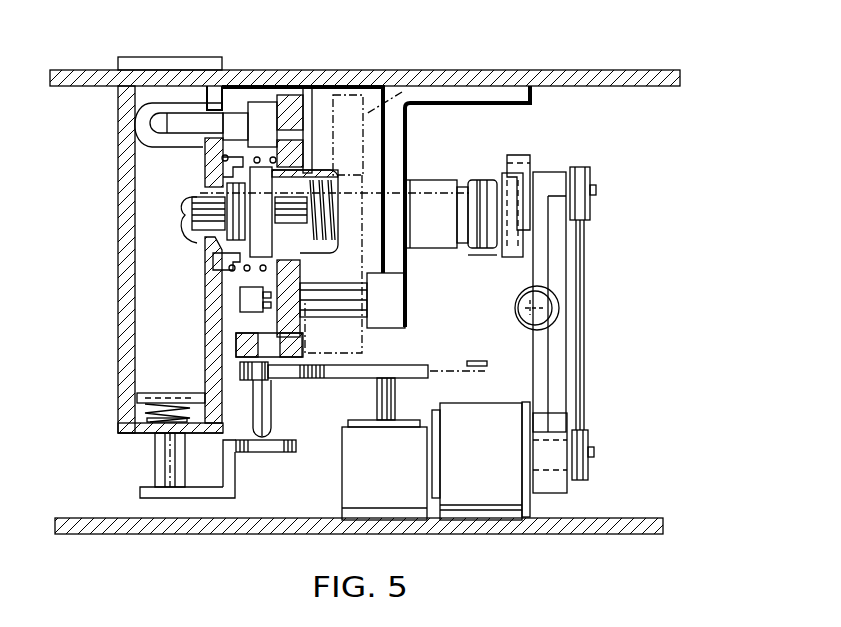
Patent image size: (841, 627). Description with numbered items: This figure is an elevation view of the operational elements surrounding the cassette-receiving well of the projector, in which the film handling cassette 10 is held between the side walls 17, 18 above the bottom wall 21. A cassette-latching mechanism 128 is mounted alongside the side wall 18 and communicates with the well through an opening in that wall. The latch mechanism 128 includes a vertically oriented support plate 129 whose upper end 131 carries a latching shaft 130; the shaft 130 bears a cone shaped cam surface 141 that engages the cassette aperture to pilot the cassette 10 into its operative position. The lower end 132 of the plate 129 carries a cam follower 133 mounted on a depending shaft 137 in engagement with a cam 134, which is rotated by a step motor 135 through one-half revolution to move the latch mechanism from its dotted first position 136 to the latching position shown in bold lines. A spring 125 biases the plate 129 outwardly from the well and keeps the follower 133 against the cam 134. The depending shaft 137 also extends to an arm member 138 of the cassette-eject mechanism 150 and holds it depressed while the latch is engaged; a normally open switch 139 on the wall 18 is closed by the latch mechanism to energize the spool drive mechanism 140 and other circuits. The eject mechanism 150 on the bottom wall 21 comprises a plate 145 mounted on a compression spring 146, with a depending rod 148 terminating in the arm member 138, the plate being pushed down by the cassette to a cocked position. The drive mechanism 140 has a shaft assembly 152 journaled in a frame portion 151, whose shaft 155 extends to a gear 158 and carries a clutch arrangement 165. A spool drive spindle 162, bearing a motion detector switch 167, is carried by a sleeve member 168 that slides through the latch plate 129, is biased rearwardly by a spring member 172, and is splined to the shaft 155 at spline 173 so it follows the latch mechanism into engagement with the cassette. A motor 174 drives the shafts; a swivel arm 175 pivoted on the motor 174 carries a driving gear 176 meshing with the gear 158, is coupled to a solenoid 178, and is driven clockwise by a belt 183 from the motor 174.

The film handling cassette 10 is at (197, 56).
The side wall 17 is at (118, 106).
The side wall 18 is at (208, 97).
The bottom wall 21 is at (131, 436).
The spring 125 is at (205, 150).
The cassette-latching mechanism 128 is at (313, 90).
The support plate 129 is at (209, 117).
The latching shaft 130 is at (192, 117).
The upper end 131 is at (303, 95).
The lower end 132 is at (302, 340).
The cam follower 133 is at (265, 380).
The cam 134 is at (412, 366).
The motor 135 is at (355, 487).
The first position 136 is at (408, 86).
The depending shaft 137 is at (270, 422).
The arm member 138 is at (268, 452).
The switch 139 is at (240, 300).
The spool drive mechanism 140 is at (600, 230).
The cone shaped cam surface 141 is at (121, 129).
The plate 145 is at (192, 393).
The compression spring 146 is at (140, 412).
The depending rod 148 is at (178, 480).
The cassette-eject mechanism 150 is at (140, 440).
The frame portion 151 is at (407, 165).
The shaft assembly 152 is at (473, 264).
The shaft 155 is at (388, 280).
The gear 158 is at (502, 173).
The spool drive spindle 162 is at (190, 238).
The clutch arrangement 165 is at (480, 182).
The motion detector switch 167 is at (225, 255).
The sleeve member 168 is at (313, 178).
The spring member 172 is at (335, 202).
The spline 173 is at (300, 272).
The motor 174 is at (483, 485).
The swivel arm 175 is at (536, 349).
The driving gear 176 is at (530, 157).
The solenoid 178 is at (514, 310).
The belt 183 is at (586, 312).